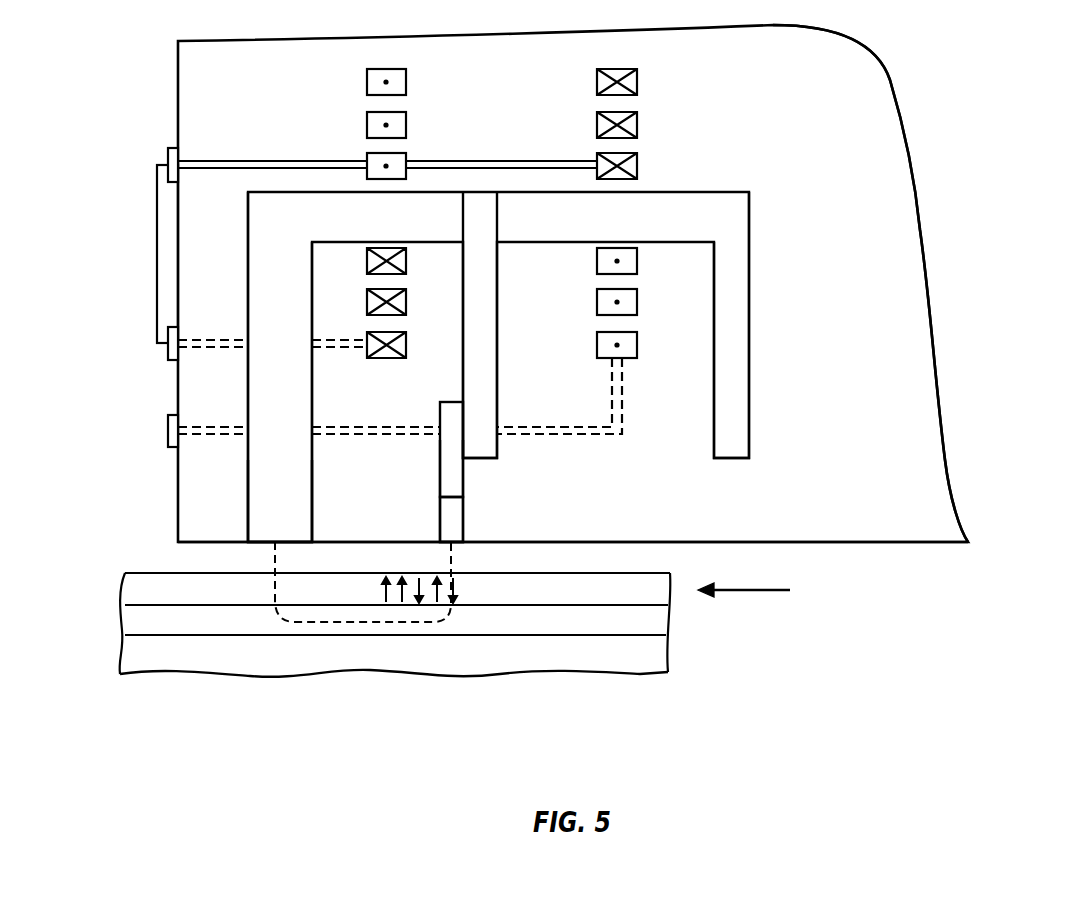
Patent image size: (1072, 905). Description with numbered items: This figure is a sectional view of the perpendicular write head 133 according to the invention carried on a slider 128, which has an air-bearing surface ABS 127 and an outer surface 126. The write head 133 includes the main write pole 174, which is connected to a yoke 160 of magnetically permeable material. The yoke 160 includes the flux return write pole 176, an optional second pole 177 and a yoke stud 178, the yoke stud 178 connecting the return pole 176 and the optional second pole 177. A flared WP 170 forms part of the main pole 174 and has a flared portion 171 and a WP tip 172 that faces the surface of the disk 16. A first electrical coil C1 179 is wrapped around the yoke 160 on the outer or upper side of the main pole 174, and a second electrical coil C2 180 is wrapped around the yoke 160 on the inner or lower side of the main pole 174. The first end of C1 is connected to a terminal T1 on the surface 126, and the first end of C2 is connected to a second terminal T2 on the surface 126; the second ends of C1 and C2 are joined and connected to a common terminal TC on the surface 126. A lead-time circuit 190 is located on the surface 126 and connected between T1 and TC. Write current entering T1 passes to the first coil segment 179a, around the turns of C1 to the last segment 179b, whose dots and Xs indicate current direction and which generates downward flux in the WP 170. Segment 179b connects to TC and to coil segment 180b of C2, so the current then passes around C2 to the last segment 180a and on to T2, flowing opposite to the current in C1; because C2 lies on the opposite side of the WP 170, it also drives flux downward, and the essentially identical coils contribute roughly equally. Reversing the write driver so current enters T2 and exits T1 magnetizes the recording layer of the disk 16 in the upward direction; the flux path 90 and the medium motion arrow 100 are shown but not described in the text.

The outer surface 126 is at (178, 72).
The slider 128 is at (878, 86).
The ABS 127 is at (875, 546).
The perpendicular write head 133 is at (993, 32).
The yoke 160 is at (735, 192).
The yoke stud 178 is at (268, 223).
The main write pole 174 is at (488, 377).
The second pole 177 is at (740, 373).
The flux return write pole 176 is at (258, 506).
The flared WP 170 is at (440, 418).
The flared portion 171 is at (440, 470).
The WP tip 172 is at (440, 507).
The lead-time circuit 190 is at (168, 250).
The common terminal TC is at (168, 156).
The terminal T1 is at (168, 355).
The second terminal T2 is at (168, 425).
The first electrical coil 179 is at (449, 227).
The first coil winding 179a is at (410, 248).
The last coil winding 179b is at (367, 158).
The second electrical coil 180 is at (684, 251).
The last coil segment 180a is at (641, 248).
The coil segment 180b is at (597, 158).
The element ABS is at (178, 543).
The disk 16 is at (128, 657).
The magnetic flux path 90 is at (280, 636).
The direction of medium motion 100 is at (730, 590).